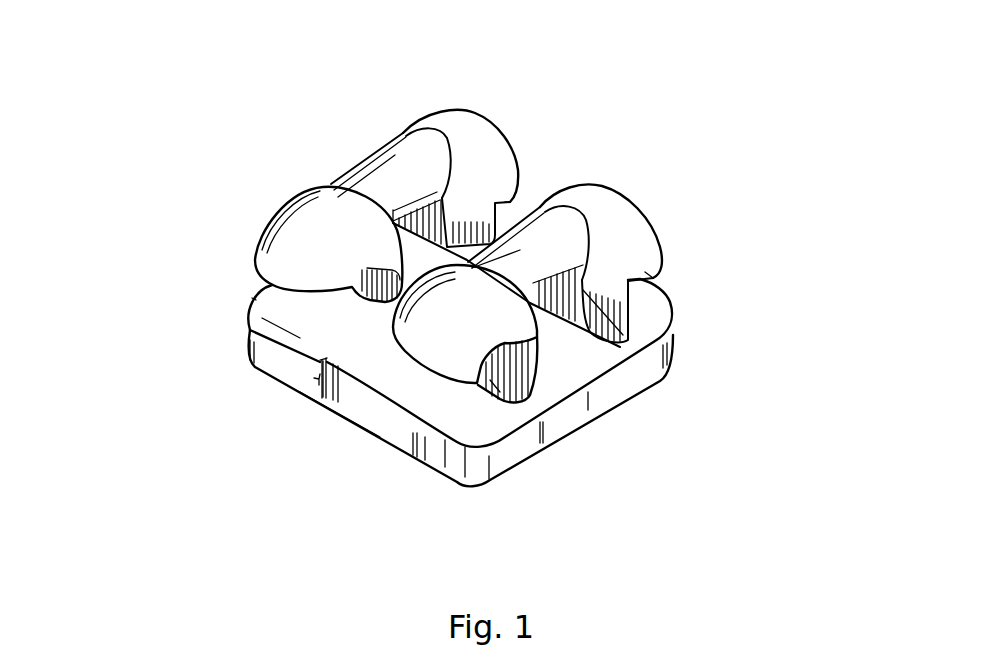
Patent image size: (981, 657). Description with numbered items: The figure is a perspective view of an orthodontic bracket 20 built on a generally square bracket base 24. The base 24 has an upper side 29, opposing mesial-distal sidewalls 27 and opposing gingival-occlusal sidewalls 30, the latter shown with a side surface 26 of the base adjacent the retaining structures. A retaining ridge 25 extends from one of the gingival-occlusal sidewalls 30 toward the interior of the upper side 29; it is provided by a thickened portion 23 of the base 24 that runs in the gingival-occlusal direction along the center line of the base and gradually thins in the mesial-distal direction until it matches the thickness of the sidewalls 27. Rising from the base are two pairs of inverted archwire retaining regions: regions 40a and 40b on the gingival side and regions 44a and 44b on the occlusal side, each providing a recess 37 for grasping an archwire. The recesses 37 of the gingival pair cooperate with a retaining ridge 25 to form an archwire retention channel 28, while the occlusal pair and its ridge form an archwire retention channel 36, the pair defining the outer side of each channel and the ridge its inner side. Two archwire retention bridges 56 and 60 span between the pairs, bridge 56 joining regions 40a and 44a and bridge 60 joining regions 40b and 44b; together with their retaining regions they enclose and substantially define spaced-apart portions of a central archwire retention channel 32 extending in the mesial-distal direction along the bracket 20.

The bracket 20 is at (545, 115).
The thickened portion 23 is at (315, 378).
The bracket base 24 is at (243, 353).
The retaining ridge 25 is at (338, 366).
The bottom surface of base 26 is at (387, 441).
The mesial-distal sidewall 27 is at (253, 296).
The archwire retention channel 28 is at (357, 290).
The upper side 29 is at (283, 305).
The gingival-occlusal sidewall 30 is at (668, 297).
The archwire retention channel 32 is at (547, 312).
The archwire retention channel 36 is at (507, 202).
The recess 37 is at (367, 267).
The inverted archwire retaining region 40a is at (480, 303).
The inverted archwire retaining region 40b is at (287, 230).
The inverted archwire retaining region 44a is at (618, 200).
The inverted archwire retaining region 44b is at (457, 123).
The archwire retention bridge 56 is at (527, 248).
The archwire retention bridge 60 is at (377, 167).